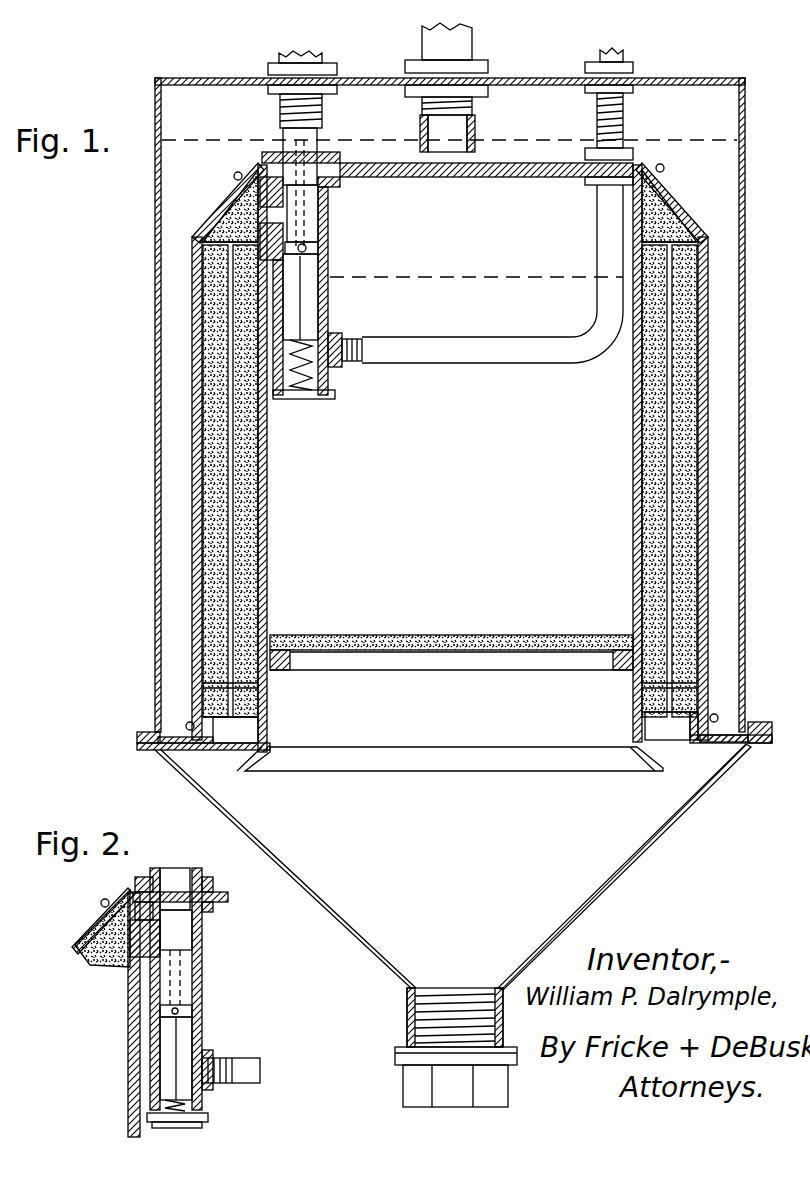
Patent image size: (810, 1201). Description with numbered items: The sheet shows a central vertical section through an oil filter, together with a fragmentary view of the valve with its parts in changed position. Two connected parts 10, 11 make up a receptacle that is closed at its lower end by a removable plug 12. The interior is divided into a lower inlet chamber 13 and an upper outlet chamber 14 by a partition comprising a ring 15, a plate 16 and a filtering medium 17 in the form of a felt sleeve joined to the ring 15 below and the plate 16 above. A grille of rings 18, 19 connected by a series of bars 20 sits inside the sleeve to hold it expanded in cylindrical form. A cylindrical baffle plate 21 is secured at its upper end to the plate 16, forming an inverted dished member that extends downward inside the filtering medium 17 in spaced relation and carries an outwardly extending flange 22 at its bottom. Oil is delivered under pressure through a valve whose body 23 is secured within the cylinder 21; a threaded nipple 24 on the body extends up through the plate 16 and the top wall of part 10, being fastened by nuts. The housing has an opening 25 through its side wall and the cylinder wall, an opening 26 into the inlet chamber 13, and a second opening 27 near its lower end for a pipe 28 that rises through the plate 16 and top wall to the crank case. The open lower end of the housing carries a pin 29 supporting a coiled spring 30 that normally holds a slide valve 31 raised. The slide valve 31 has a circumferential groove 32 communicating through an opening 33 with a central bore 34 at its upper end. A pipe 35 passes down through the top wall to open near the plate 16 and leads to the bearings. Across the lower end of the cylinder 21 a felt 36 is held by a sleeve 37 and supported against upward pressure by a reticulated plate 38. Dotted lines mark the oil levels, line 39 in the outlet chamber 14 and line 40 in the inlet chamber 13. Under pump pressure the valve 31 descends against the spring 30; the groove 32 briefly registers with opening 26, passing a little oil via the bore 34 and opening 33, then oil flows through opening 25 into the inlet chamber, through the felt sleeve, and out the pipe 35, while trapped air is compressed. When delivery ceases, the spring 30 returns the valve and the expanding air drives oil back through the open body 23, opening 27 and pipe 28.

In FIG. 1, the receptacle part 10 is at (157, 512).
In FIG. 1, the receptacle part 11 is at (321, 905).
In FIG. 1, the removable plug 12 is at (420, 1090).
In FIG. 1, the inlet chamber 13 is at (622, 852).
In FIG. 1, the outlet chamber 14 is at (683, 95).
In FIG. 1, the ring 15 is at (183, 752).
In FIG. 1, the plate 16 is at (503, 172).
In FIG. 2, the plate 16 is at (226, 893).
In FIG. 1, the filtering medium 17 is at (190, 575).
In FIG. 2, the filtering medium 17 is at (90, 935).
In FIG. 1, the grille ring 18 is at (263, 703).
In FIG. 1, the grille ring 19 is at (245, 245).
In FIG. 1, the bars 20 is at (207, 393).
In FIG. 2, the bars 20 is at (105, 962).
In FIG. 1, the baffle plate 21 is at (428, 727).
In FIG. 2, the baffle plate 21 is at (135, 1057).
In FIG. 1, the flange 22 is at (530, 766).
In FIG. 1, the valve body 23 is at (330, 207).
In FIG. 2, the valve body 23 is at (202, 930).
In FIG. 1, the nipple 24 is at (295, 113).
In FIG. 2, the nipple 24 is at (178, 872).
In FIG. 1, the opening 25 is at (275, 215).
In FIG. 2, the opening 25 is at (135, 937).
In FIG. 1, the opening 26 is at (330, 267).
In FIG. 2, the opening 26 is at (202, 988).
In FIG. 1, the second opening 27 is at (338, 340).
In FIG. 2, the second opening 27 is at (210, 1078).
In FIG. 1, the pipe 28 is at (607, 50).
In FIG. 2, the pipe 28 is at (262, 1070).
In FIG. 1, the pin 29 is at (305, 399).
In FIG. 2, the pin 29 is at (185, 1122).
In FIG. 1, the coiled spring 30 is at (300, 344).
In FIG. 2, the coiled spring 30 is at (173, 1112).
In FIG. 1, the slide valve 31 is at (300, 293).
In FIG. 2, the slide valve 31 is at (178, 1045).
In FIG. 1, the circumferential groove 32 is at (325, 247).
In FIG. 2, the circumferential groove 32 is at (165, 1010).
In FIG. 1, the opening 33 is at (300, 297).
In FIG. 2, the opening 33 is at (174, 1058).
In FIG. 1, the central bore 34 is at (312, 230).
In FIG. 2, the central bore 34 is at (178, 957).
In FIG. 1, the pipe 35 is at (472, 40).
In FIG. 1, the felt 36 is at (518, 652).
In FIG. 1, the sleeve 37 is at (378, 660).
In FIG. 1, the reticulated plate 38 is at (420, 635).
In FIG. 1, the oil level line 39 is at (652, 132).
In FIG. 1, the oil level line 40 is at (437, 270).